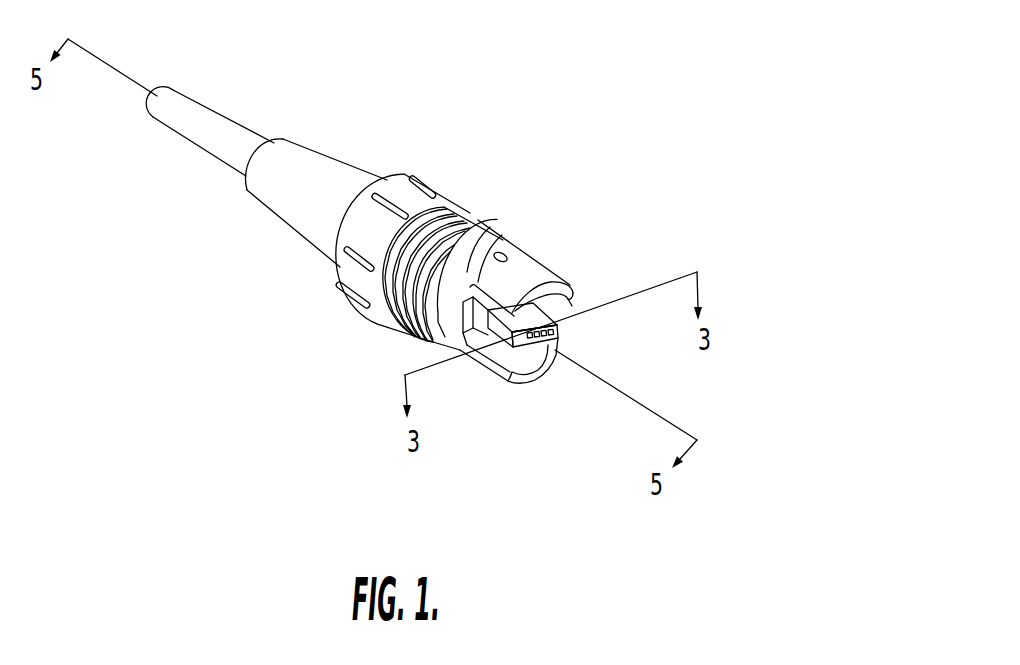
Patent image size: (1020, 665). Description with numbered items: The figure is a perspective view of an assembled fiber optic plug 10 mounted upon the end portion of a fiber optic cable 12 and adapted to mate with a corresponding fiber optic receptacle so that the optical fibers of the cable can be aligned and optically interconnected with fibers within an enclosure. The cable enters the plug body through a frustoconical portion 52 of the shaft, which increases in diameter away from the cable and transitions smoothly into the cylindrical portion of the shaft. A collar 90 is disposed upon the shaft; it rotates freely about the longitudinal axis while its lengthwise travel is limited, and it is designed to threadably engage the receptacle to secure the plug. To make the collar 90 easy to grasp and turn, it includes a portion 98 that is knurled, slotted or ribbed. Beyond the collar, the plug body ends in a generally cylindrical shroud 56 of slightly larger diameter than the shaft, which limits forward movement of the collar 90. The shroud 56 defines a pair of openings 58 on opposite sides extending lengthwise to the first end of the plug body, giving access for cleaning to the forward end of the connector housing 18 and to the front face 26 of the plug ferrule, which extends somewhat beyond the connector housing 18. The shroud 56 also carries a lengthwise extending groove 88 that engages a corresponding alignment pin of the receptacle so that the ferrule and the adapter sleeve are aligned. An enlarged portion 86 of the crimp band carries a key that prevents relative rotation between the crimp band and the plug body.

The fiber optic plug 10 is at (523, 158).
The fiber optic cable 12 is at (197, 113).
The connector housing 18 is at (456, 348).
The front face 26 is at (558, 333).
The frustoconical portion 52 is at (332, 187).
The shroud 56 is at (537, 258).
The openings 58 is at (555, 326).
The enlarged portion 86 is at (480, 222).
The lengthwise extending groove 88 is at (585, 292).
The collar 90 is at (350, 290).
The knurled portion 98 is at (426, 181).